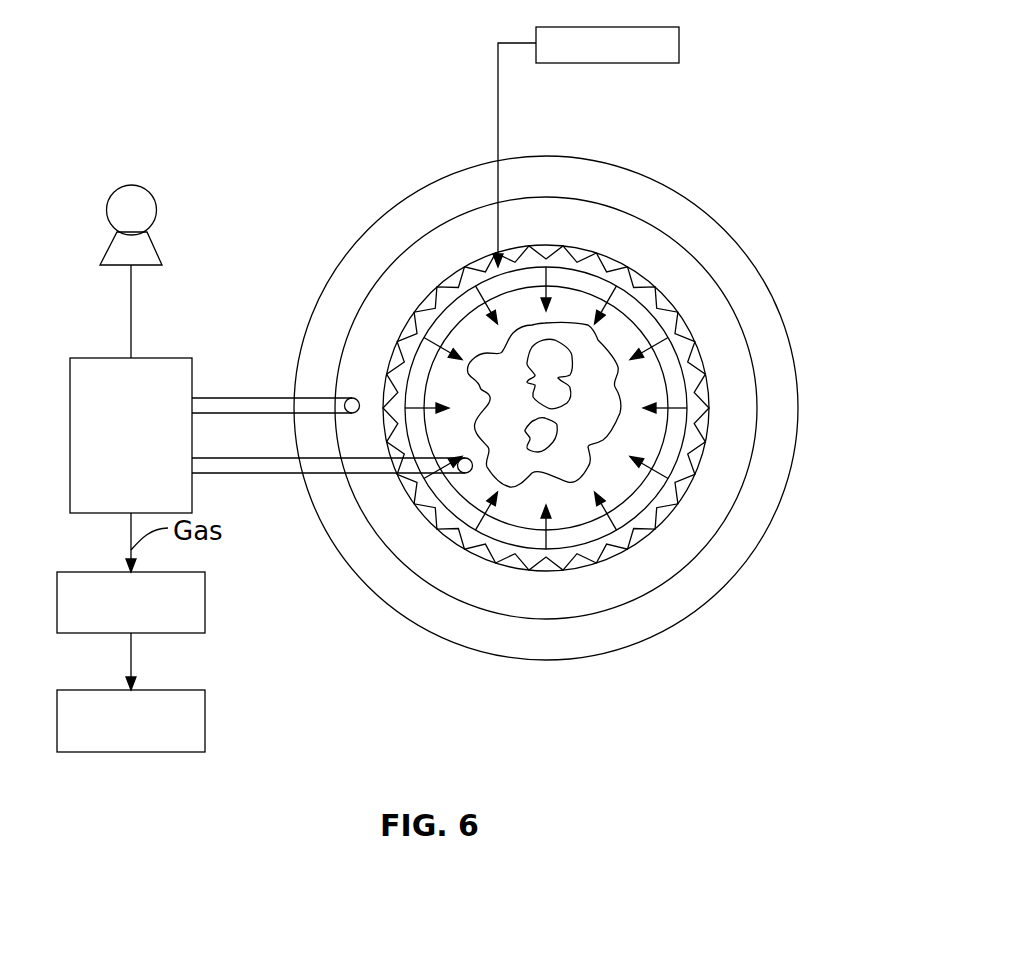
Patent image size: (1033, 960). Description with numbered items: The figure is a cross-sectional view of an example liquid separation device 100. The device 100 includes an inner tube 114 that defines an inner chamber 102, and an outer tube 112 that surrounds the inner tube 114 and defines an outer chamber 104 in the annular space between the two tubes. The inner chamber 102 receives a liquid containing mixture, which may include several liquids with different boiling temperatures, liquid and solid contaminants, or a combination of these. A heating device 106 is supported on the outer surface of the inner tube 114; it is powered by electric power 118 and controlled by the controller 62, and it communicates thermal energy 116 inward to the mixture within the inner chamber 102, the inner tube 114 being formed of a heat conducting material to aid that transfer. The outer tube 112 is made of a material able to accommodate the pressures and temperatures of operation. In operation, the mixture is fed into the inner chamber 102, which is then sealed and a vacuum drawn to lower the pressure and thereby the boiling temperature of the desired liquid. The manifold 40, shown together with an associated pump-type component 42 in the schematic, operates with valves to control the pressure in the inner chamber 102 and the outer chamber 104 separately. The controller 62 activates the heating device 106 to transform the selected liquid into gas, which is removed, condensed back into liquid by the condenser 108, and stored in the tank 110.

The liquid separation device 100 is at (208, 49).
The controller 62 is at (679, 48).
The electric power 118 is at (498, 107).
The outer tube 112 is at (690, 594).
The outer chamber 104 is at (688, 525).
The heating device 106 is at (686, 472).
The inner tube 114 is at (670, 349).
The thermal energy 116 is at (555, 287).
The inner chamber 102 is at (640, 457).
The manifold 40 is at (271, 435).
The pump 42 is at (138, 251).
The condenser 108 is at (205, 602).
The tank 110 is at (205, 722).